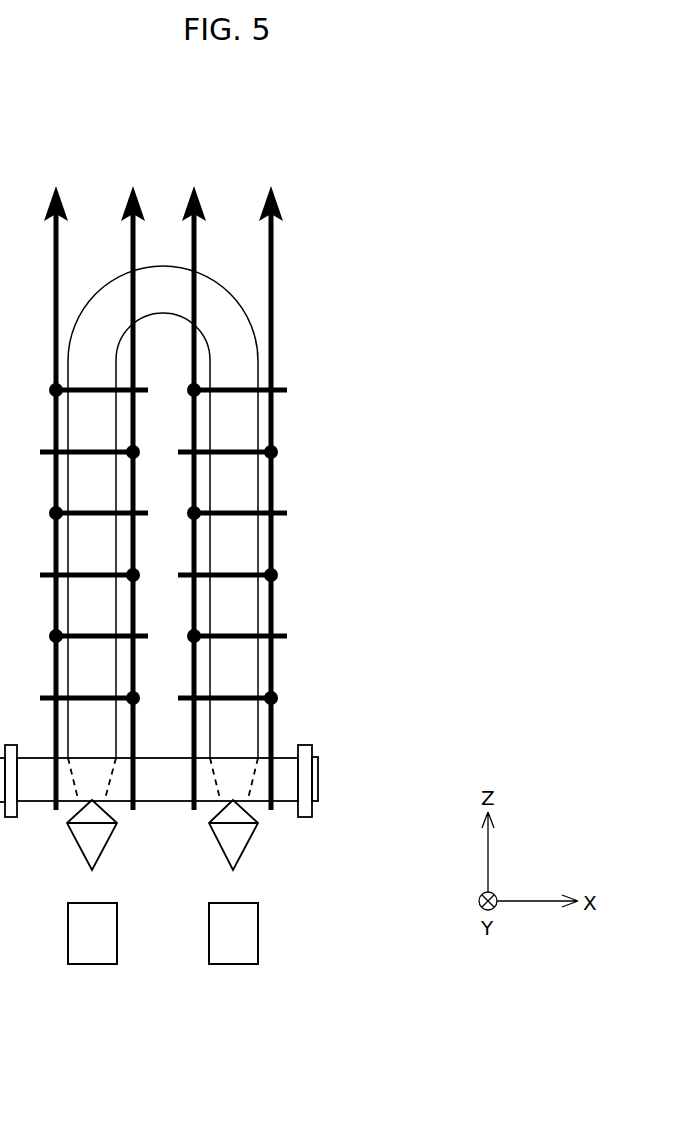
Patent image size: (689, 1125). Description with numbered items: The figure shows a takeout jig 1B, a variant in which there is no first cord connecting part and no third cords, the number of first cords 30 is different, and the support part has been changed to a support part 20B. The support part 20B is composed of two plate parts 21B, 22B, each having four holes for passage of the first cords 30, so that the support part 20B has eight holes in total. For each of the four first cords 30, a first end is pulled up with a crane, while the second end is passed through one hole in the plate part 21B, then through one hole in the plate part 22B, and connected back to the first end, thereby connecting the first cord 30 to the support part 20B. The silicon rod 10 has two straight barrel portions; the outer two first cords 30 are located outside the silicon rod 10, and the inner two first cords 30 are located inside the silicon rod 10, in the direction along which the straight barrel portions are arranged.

The takeout jig 1B is at (308, 137).
The silicon rod 10 is at (218, 285).
The first cords 30 is at (275, 265).
The support part 20B is at (285, 757).
The plate part 21B is at (280, 802).
The plate part 22B is at (233, 814).